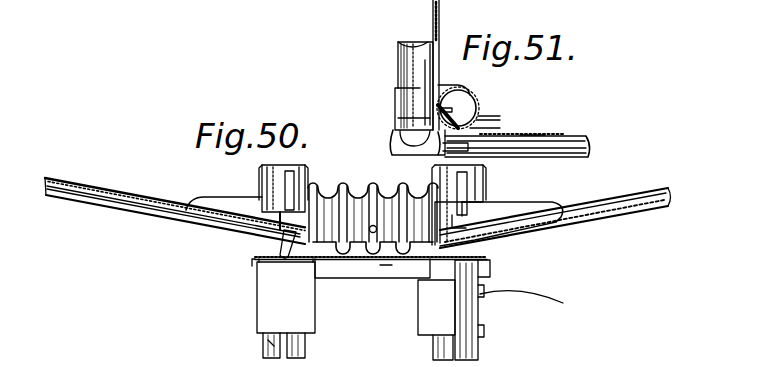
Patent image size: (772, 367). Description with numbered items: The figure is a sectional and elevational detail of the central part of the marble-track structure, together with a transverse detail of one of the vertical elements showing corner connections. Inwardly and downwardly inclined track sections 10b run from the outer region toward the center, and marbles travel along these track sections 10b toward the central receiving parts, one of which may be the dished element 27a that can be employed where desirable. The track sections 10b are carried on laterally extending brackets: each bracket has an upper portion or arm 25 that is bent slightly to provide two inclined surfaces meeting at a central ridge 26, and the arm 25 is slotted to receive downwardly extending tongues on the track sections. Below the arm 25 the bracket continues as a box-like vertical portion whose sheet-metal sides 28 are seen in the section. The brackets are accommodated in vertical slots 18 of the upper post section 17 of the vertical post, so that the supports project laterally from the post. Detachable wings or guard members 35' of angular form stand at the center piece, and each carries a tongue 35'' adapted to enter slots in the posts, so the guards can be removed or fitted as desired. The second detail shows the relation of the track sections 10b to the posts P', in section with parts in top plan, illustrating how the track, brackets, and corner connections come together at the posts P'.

In FIG. 50, the inwardly and downwardly inclined track section 10b is at (92, 196).
In FIG. 51, the inwardly and downwardly inclined track section 10b is at (398, 50).
In FIG. 50, the detachable wing or guard member 35' is at (368, 199).
In FIG. 51, the detachable wing or guard member 35' is at (538, 105).
In FIG. 50, the tongue 35'' is at (398, 202).
In FIG. 51, the tongue 35'' is at (500, 97).
In FIG. 50, the central ridge 26 is at (466, 240).
In FIG. 50, the dished element 27a is at (370, 261).
In FIG. 51, the dished element 27a is at (405, 147).
In FIG. 50, the bracket side 28 is at (316, 305).
In FIG. 50, the upper portion or arm of bracket 25 is at (490, 272).
In FIG. 51, the upper portion or arm of bracket 25 is at (444, 87).
In FIG. 50, the upper post section 17 is at (297, 347).
In FIG. 51, the upper post section 17 is at (470, 127).
In FIG. 50, the vertical slot 18 is at (483, 290).
In FIG. 51, the vertical slot 18 is at (478, 111).
In FIG. 50, the post P' is at (307, 326).
In FIG. 51, the post P' is at (464, 95).